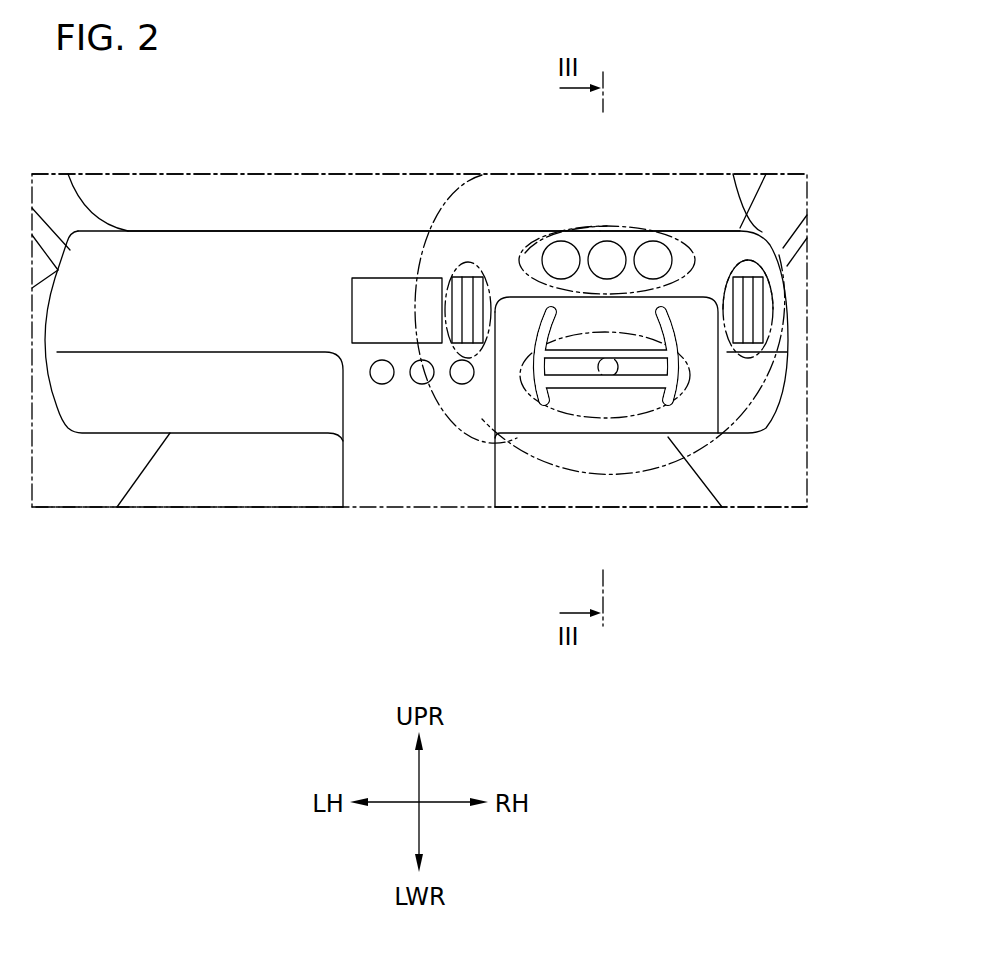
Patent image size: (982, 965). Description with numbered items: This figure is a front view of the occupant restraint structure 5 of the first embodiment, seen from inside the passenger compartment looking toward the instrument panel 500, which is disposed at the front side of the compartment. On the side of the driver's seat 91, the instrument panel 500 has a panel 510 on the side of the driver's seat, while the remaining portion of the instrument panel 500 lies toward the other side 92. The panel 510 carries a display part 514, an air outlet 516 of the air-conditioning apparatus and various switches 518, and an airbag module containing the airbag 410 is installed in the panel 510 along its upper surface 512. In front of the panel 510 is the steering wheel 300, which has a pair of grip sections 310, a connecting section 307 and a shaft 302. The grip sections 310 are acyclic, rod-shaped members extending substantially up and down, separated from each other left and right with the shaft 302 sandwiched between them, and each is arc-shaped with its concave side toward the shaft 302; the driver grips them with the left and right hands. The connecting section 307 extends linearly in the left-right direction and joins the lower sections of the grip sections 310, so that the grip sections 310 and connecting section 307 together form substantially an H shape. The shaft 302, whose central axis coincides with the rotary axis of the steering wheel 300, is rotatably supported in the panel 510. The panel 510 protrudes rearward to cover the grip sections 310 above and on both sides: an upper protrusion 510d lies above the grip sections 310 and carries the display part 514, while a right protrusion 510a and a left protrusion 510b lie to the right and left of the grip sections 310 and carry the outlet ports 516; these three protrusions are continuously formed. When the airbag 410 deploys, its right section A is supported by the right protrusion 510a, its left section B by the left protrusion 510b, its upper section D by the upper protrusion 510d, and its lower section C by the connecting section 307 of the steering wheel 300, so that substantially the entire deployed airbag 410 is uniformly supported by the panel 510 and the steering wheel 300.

The occupant restraint structure 5 is at (350, 192).
The instrument panel 500 is at (282, 222).
The panel on the side of the driver's seat 510 is at (740, 250).
The right protrusion 510a is at (773, 297).
The left protrusion 510b is at (470, 272).
The upper protrusion 510d is at (582, 242).
The upper surface 512 is at (680, 230).
The display part 514 is at (612, 255).
The air outlet 516 is at (750, 310).
The switches 518 is at (422, 384).
The airbag 410 is at (797, 174).
The steering wheel 300 is at (677, 442).
The shaft 302 is at (614, 372).
The connecting section 307 is at (573, 365).
The grip sections 310 is at (543, 397).
The driver's seat 91 is at (681, 486).
The passenger seat side 92 is at (211, 486).
The right section A is at (762, 253).
The left section B is at (430, 257).
The lower section C is at (717, 433).
The upper section D is at (532, 245).